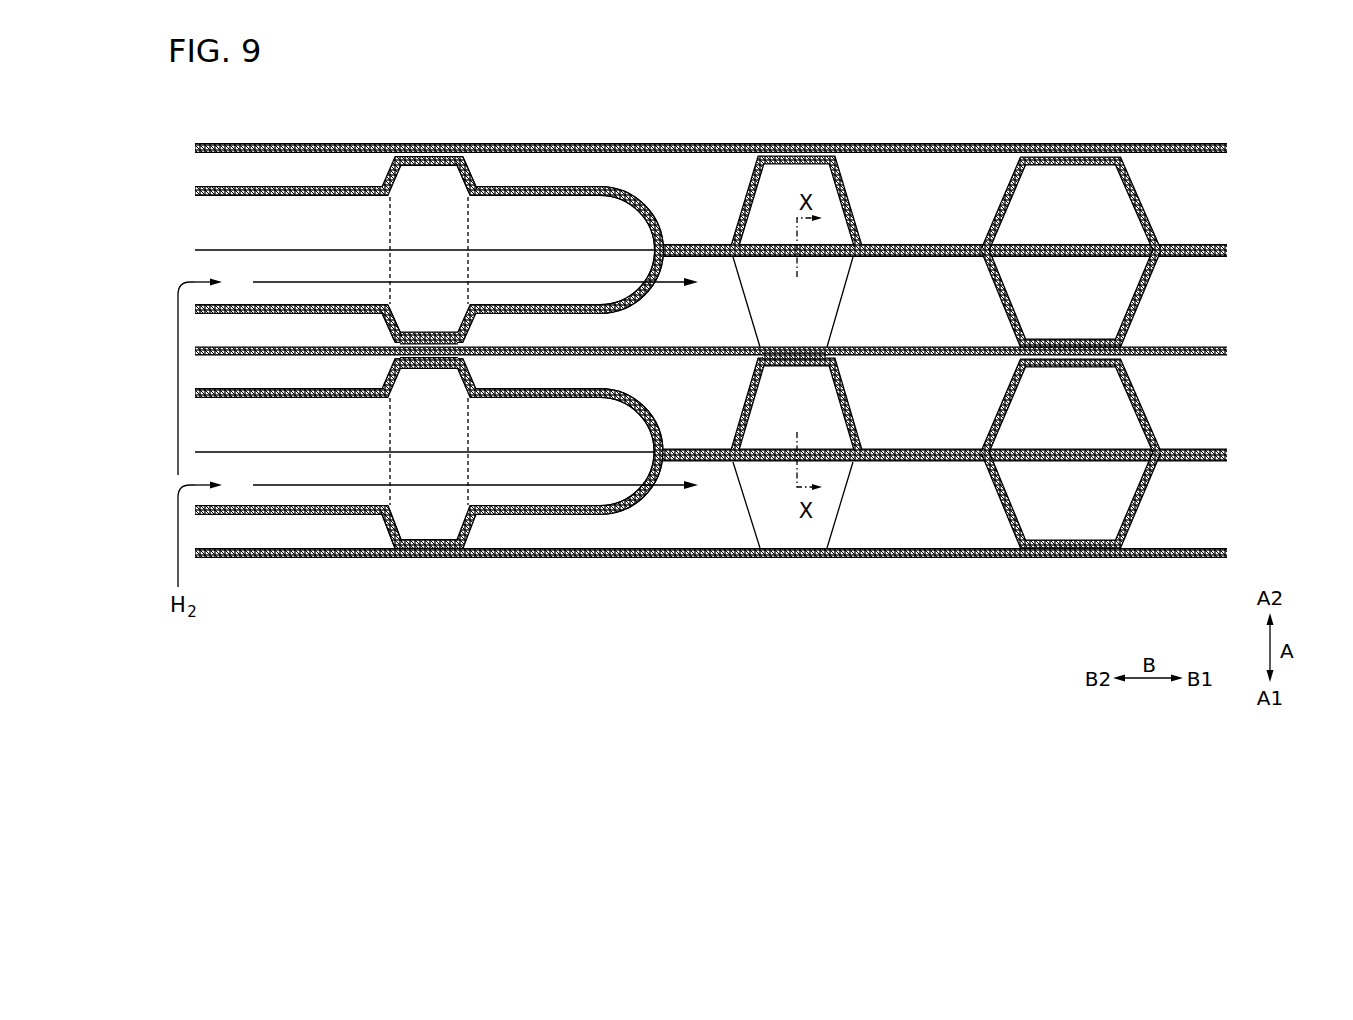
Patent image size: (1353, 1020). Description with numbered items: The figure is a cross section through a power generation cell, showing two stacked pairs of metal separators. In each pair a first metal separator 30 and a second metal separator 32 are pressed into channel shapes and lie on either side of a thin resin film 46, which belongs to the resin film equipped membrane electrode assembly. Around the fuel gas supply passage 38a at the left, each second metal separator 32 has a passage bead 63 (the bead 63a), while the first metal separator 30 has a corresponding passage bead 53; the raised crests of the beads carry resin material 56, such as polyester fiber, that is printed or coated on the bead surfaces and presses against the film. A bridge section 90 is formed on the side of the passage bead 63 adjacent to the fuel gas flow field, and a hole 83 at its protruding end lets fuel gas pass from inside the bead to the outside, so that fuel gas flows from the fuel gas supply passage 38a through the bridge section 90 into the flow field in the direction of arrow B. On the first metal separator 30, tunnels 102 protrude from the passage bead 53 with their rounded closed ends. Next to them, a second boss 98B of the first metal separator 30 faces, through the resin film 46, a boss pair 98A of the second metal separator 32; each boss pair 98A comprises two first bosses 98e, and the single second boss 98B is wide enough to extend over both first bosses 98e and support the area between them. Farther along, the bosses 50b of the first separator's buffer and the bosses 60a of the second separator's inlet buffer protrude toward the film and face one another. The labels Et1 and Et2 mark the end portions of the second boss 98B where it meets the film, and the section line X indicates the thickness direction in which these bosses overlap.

The first metal separator 30 is at (298, 183).
The second metal separator 32 is at (319, 301).
The resin film 46 is at (528, 143).
The resin material 56 is at (427, 156).
The passage bead 53 is at (470, 176).
The passage bead 63 is at (390, 322).
The bridge section 90 is at (545, 312).
The hole 83 is at (630, 302).
The tunnels 102 is at (590, 186).
The second bosses 98B is at (745, 180).
The boss pairs 98A is at (740, 296).
The first bosses 98e is at (840, 283).
The bosses 50b is at (1005, 188).
The bosses 60a is at (1142, 290).
The fuel gas supply passage 38a is at (160, 328).
The first end portion Et1 is at (787, 350).
The second end portion Et2 is at (813, 365).